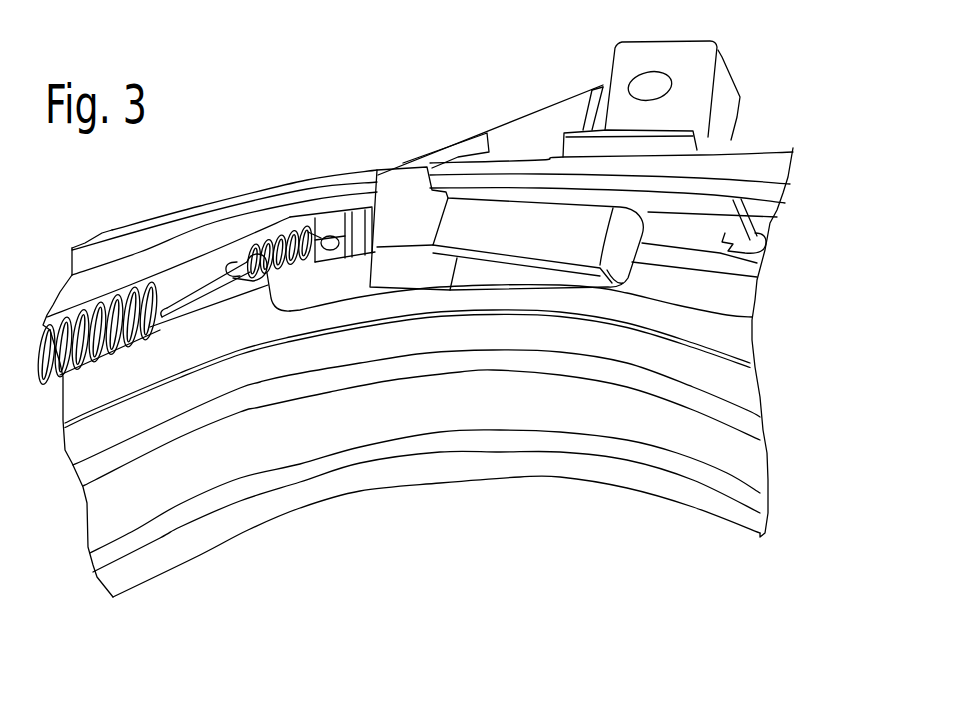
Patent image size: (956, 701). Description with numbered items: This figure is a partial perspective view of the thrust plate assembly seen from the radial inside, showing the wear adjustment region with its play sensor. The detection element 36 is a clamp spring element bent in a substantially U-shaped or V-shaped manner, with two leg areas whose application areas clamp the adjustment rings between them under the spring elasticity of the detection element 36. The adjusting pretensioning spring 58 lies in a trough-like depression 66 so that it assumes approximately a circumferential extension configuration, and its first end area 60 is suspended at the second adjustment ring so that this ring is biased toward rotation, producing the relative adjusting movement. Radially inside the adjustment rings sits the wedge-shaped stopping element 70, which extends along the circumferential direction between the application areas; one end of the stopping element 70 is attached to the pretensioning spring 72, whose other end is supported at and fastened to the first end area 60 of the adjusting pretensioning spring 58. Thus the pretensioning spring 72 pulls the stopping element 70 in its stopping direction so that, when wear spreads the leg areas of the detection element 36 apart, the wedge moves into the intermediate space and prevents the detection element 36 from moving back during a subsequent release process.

The detection element 36 is at (490, 207).
The adjusting pretensioning spring 58 is at (140, 288).
The first end area 60 is at (226, 295).
The trough-like depression 66 is at (228, 297).
The stopping element 70 is at (667, 210).
The pretensioning spring 72 is at (301, 230).